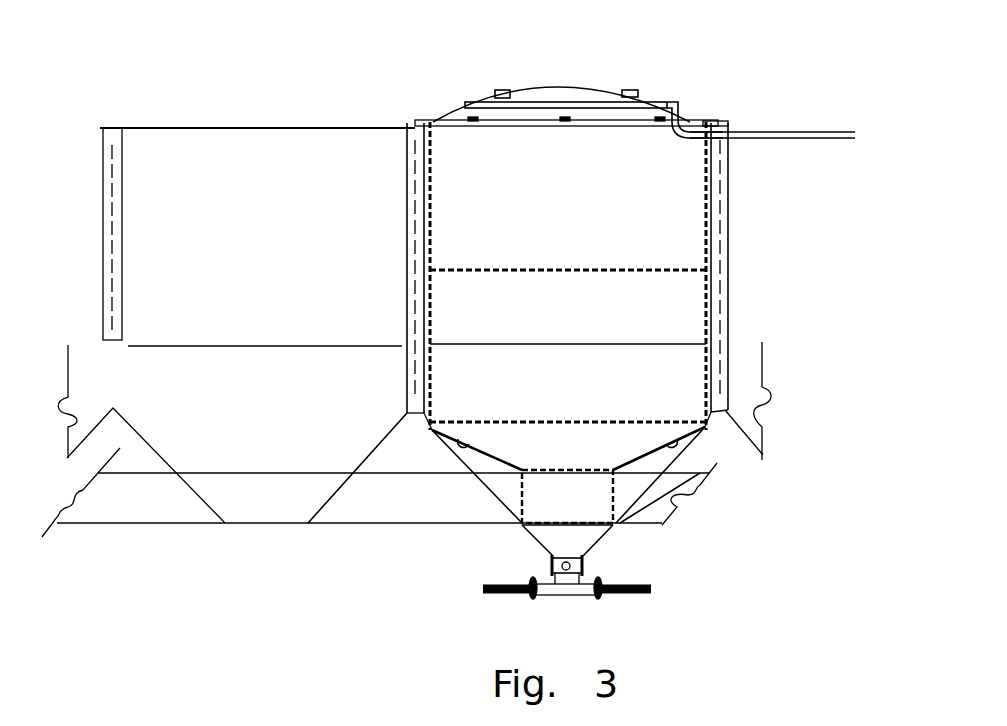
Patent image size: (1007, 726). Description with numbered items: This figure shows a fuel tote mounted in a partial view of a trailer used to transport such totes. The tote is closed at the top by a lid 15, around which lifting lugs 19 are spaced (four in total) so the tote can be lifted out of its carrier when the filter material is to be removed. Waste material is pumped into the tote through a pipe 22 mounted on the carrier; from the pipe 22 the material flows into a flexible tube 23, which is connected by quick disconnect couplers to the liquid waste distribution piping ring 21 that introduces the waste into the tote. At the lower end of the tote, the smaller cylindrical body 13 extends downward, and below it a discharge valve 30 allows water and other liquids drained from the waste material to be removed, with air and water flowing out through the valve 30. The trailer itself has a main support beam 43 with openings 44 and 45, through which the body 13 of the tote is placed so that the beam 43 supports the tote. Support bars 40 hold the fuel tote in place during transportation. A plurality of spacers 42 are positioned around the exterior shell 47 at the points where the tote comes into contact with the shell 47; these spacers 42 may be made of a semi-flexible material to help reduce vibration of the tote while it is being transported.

The smaller cylindrical body 13 is at (522, 493).
The lid 15 is at (563, 87).
The lifting lugs 19 is at (628, 90).
The liquid waste distribution piping ring 21 is at (660, 102).
The pipe 22 is at (768, 138).
The flexible tube 23 is at (697, 119).
The discharge valve 30 is at (582, 567).
The support bars 40 is at (405, 275).
The spacers 42 is at (432, 433).
The main support beam 43 is at (358, 505).
The opening 44 is at (553, 475).
The opening 45 is at (620, 523).
The exterior shell 47 is at (378, 447).